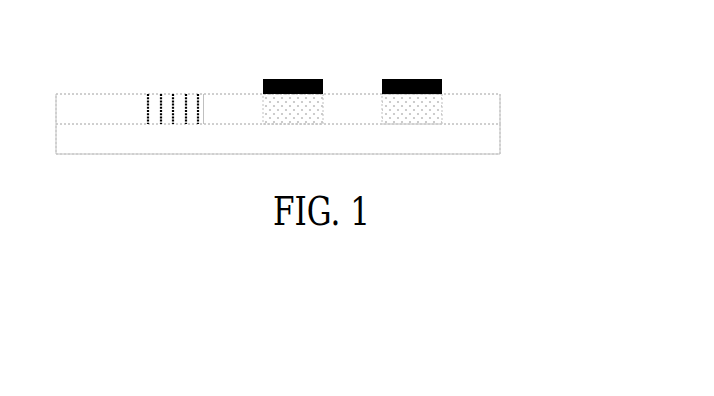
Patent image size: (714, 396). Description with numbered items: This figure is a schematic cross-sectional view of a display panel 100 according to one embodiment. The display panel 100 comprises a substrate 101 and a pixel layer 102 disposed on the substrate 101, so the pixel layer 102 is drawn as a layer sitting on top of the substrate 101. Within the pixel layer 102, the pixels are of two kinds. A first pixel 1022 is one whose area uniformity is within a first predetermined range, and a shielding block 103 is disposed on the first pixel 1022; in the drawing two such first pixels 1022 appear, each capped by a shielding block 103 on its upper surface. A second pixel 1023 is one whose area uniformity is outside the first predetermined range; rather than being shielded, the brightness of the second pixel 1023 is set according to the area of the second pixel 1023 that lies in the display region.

The display panel 100 is at (132, 47).
The substrate 101 is at (473, 143).
The pixel layer 102 is at (473, 112).
The first pixel 1022 is at (410, 110).
The second pixel 1023 is at (168, 112).
The shielding block 103 is at (317, 79).